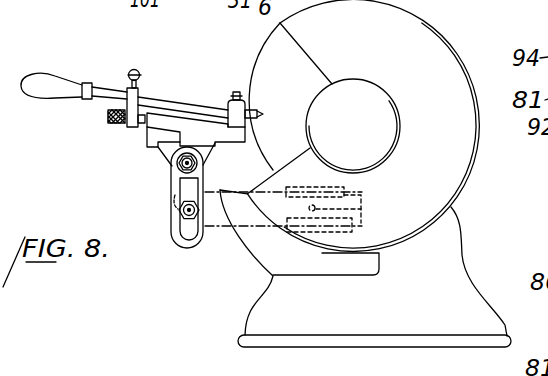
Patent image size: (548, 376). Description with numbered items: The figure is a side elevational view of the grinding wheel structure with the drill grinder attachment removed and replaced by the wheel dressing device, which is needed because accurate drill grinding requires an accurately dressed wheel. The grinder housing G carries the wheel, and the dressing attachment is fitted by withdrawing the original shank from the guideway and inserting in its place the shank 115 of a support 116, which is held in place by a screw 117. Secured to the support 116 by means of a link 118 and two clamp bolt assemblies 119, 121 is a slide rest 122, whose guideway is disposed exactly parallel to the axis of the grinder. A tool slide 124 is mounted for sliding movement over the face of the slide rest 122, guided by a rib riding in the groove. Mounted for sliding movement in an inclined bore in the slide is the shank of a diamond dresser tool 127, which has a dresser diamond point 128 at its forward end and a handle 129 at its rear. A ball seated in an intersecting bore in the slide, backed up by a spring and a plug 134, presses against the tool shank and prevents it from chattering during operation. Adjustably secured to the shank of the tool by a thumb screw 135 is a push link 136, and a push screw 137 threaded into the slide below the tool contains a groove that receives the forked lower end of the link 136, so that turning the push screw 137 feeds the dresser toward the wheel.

The handle 129 is at (40, 80).
The push link 136 is at (90, 105).
The diamond dresser tool 127 is at (170, 102).
The thumb screw 135 is at (141, 62).
The push screw 137 is at (107, 118).
The tool slide 124 is at (187, 128).
The plug 134 is at (243, 89).
The dresser diamond point 128 is at (262, 116).
The slide rest 122 is at (158, 143).
The link 118 is at (172, 192).
The clamp bolt assembly 119 is at (180, 162).
The clamp bolt assembly 121 is at (185, 213).
The support 116 is at (219, 218).
The screw 117 is at (292, 190).
The shank 115 is at (354, 228).
The grinder housing G is at (455, 230).